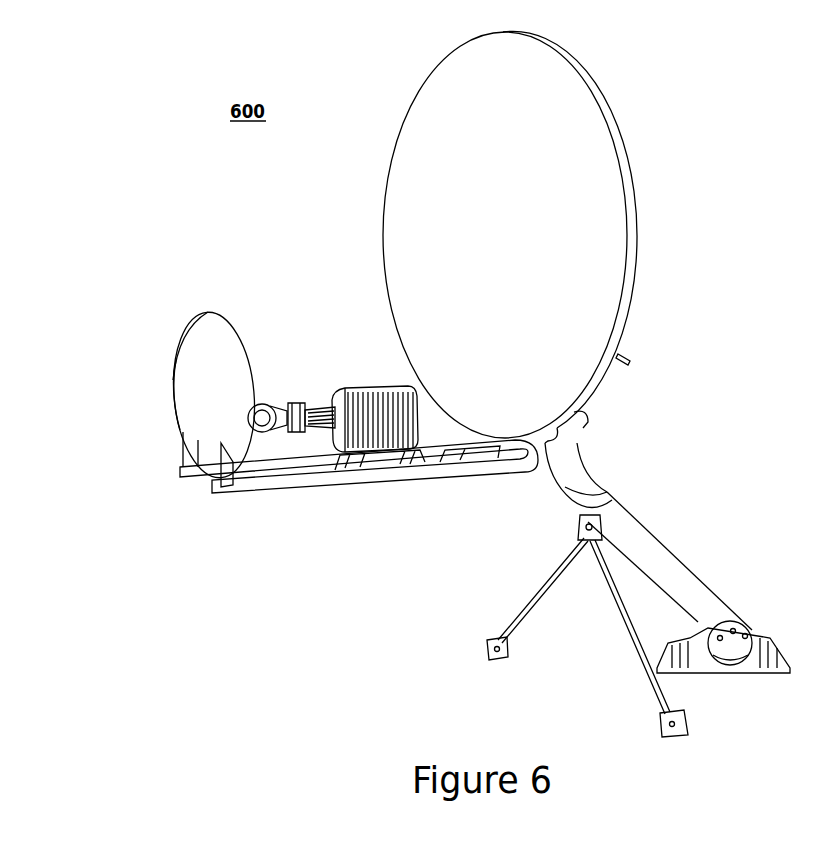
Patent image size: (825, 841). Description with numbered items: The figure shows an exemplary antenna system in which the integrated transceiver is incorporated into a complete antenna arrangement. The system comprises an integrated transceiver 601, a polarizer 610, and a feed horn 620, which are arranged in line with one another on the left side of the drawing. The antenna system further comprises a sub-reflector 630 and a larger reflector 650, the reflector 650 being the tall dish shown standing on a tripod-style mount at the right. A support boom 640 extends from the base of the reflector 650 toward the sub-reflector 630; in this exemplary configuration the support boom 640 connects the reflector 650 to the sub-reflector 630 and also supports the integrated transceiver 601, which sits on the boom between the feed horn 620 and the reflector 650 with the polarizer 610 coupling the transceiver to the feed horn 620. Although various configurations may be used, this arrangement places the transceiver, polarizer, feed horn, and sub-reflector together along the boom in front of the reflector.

The integrated transceiver 601 is at (357, 383).
The polarizer 610 is at (317, 404).
The feed horn 620 is at (263, 394).
The sub-reflector 630 is at (175, 343).
The support boom 640 is at (376, 487).
The reflector 650 is at (633, 182).